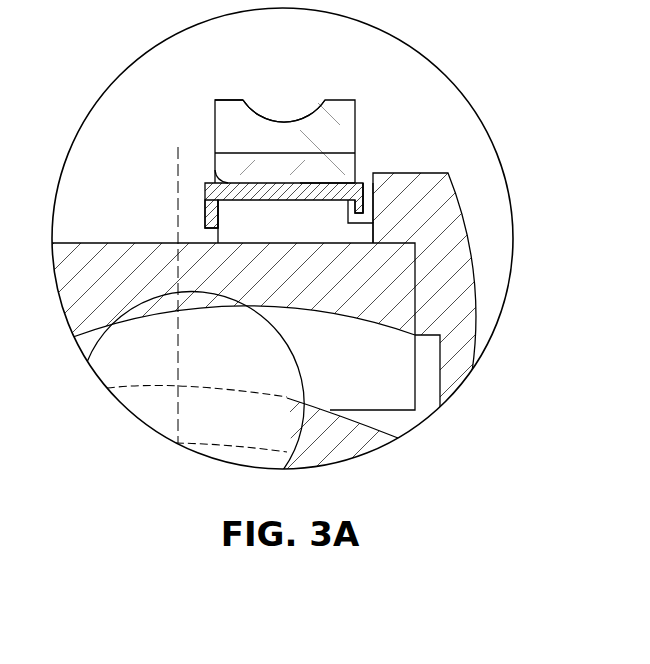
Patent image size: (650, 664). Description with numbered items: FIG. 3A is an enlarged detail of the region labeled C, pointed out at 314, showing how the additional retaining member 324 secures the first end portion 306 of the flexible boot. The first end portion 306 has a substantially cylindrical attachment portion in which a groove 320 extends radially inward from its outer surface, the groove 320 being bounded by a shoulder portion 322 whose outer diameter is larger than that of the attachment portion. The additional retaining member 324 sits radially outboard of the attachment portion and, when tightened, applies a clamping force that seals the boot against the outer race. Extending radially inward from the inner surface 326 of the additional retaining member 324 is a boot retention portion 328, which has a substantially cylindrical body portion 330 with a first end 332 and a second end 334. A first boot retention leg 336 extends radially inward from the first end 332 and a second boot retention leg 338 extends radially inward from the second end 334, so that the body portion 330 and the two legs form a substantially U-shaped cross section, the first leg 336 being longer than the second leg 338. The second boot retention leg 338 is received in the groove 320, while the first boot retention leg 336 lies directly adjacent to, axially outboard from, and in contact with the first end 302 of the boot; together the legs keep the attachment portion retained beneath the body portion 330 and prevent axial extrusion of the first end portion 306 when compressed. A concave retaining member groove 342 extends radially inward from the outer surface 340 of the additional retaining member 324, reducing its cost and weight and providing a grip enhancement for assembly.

The detail region C is at (93, 105).
The first end 302 is at (225, 243).
The first end portion 306 is at (470, 238).
The detail view boundary 314 is at (418, 85).
The groove 320 is at (358, 228).
The shoulder portion 322 is at (397, 172).
The additional retaining member 324 is at (215, 127).
The inner surface 326 is at (225, 183).
The boot retention portion 328 is at (283, 187).
The substantially cylindrical body portion 330 is at (320, 183).
The first end 332 is at (205, 185).
The second end 334 is at (363, 183).
The first boot retention leg 336 is at (205, 210).
The second boot retention leg 338 is at (365, 200).
The outer surface 340 is at (228, 100).
The retaining member groove 342 is at (248, 102).